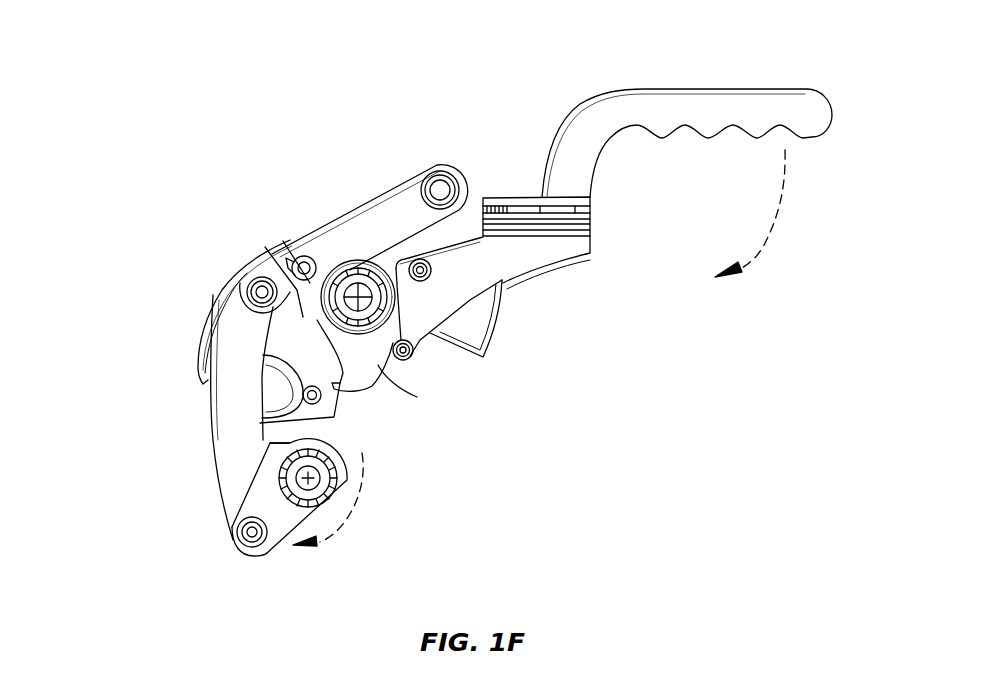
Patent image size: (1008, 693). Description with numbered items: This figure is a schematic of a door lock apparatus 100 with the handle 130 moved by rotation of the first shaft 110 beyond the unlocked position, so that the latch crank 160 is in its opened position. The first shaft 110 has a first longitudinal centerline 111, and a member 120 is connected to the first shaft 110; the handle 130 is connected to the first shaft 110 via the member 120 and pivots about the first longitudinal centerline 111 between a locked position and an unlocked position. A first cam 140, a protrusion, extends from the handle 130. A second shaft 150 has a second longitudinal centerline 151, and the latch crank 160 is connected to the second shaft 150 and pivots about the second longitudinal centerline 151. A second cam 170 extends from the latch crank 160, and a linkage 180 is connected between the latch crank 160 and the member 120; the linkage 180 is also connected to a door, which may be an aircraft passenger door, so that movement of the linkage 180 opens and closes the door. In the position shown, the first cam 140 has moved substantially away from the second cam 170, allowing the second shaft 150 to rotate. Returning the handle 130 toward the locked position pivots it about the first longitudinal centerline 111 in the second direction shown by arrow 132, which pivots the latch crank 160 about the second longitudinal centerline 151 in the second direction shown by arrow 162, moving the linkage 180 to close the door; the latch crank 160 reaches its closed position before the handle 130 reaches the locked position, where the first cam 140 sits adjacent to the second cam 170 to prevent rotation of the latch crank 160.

The door lock apparatus 100 is at (150, 106).
The first shaft 110 is at (390, 380).
The first longitudinal centerline 111 is at (343, 263).
The member 120 is at (257, 273).
The handle 130 is at (730, 98).
The arrow 132 is at (782, 193).
The first cam 140 is at (492, 350).
The second shaft 150 is at (333, 480).
The second longitudinal centerline 151 is at (323, 485).
The latch crank 160 is at (257, 513).
The arrow 162 is at (322, 540).
The second cam 170 is at (290, 443).
The linkage 180 is at (398, 194).